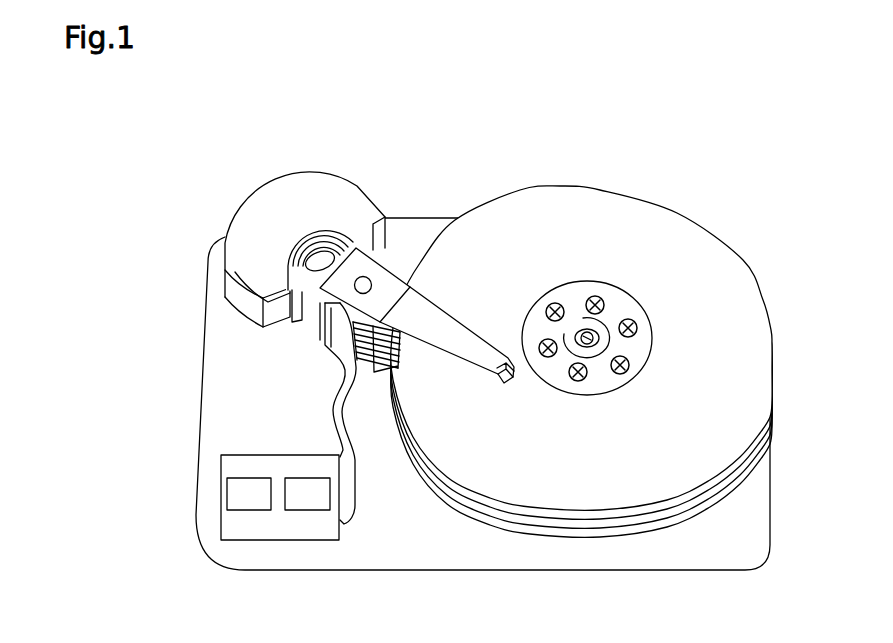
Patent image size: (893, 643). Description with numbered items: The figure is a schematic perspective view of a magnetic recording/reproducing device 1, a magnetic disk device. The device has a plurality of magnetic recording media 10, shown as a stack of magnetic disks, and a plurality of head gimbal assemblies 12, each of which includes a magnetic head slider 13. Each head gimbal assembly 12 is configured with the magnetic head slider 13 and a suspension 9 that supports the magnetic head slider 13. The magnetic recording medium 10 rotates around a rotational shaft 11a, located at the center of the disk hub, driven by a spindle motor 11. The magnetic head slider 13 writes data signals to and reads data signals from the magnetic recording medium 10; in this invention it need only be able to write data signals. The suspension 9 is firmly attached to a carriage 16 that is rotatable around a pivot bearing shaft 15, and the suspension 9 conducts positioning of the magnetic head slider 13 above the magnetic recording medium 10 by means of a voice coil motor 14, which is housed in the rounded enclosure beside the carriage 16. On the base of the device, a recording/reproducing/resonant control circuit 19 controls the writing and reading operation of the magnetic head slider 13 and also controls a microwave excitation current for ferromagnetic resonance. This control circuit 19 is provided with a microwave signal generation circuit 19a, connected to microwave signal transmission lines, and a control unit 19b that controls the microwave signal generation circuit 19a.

The magnetic recording/reproducing device 1 is at (539, 102).
The suspension 9 is at (466, 357).
The magnetic recording medium 10 is at (618, 208).
The spindle motor 11 is at (578, 325).
The rotational shaft 11a is at (590, 334).
The head gimbal assembly 12 is at (553, 458).
The magnetic head slider 13 is at (515, 380).
The voice coil motor 14 is at (328, 173).
The pivot bearing shaft 15 is at (366, 283).
The carriage 16 is at (313, 318).
The recording/reproducing/resonant control circuit 19 is at (279, 520).
The microwave signal generation circuit 19a is at (249, 488).
The control unit 19b is at (307, 488).